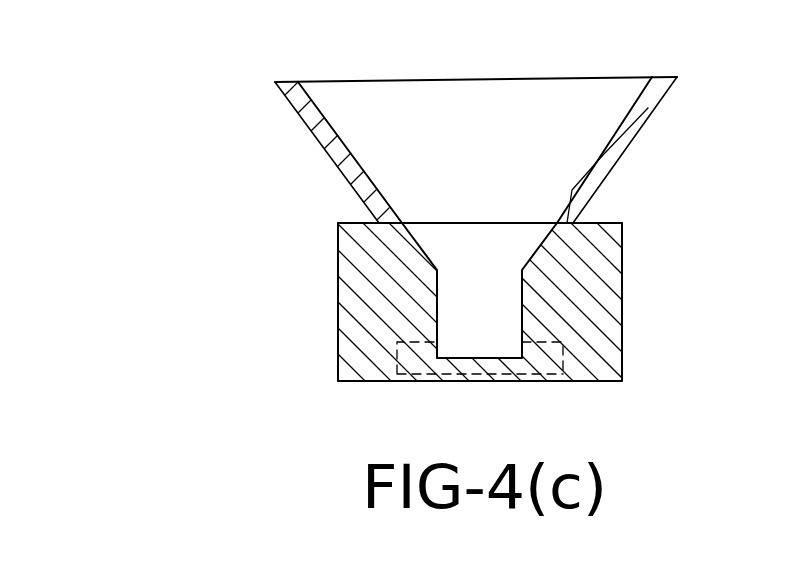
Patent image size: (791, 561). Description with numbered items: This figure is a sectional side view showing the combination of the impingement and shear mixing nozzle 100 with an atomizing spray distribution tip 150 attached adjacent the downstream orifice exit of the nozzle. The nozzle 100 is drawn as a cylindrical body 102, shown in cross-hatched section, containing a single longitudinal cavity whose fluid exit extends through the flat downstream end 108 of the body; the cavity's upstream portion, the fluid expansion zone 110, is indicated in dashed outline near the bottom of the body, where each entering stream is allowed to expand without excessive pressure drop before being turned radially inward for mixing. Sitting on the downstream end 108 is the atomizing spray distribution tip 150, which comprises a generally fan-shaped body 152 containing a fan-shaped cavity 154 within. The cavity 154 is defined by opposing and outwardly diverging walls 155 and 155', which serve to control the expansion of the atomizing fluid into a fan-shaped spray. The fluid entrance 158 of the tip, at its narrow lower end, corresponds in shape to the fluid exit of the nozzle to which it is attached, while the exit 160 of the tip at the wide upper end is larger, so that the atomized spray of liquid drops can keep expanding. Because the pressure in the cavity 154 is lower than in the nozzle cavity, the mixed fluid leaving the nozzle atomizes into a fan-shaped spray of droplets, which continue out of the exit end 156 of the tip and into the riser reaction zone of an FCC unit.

The nozzle 100 is at (263, 367).
The cylindrical body 102 is at (338, 317).
The downstream end 108 is at (356, 224).
The fluid expansion zone 110 is at (473, 348).
The atomizing spray distribution tip 150 is at (241, 172).
The fan-shaped body 152 is at (288, 103).
The fan-shaped cavity 154 is at (501, 178).
The outwardly diverging wall 155 is at (341, 165).
The outwardly diverging wall 155' is at (580, 150).
The exit end of the tip 156 is at (285, 82).
The fluid entrance of the tip 158 is at (505, 222).
The exit of the tip 160 is at (475, 95).